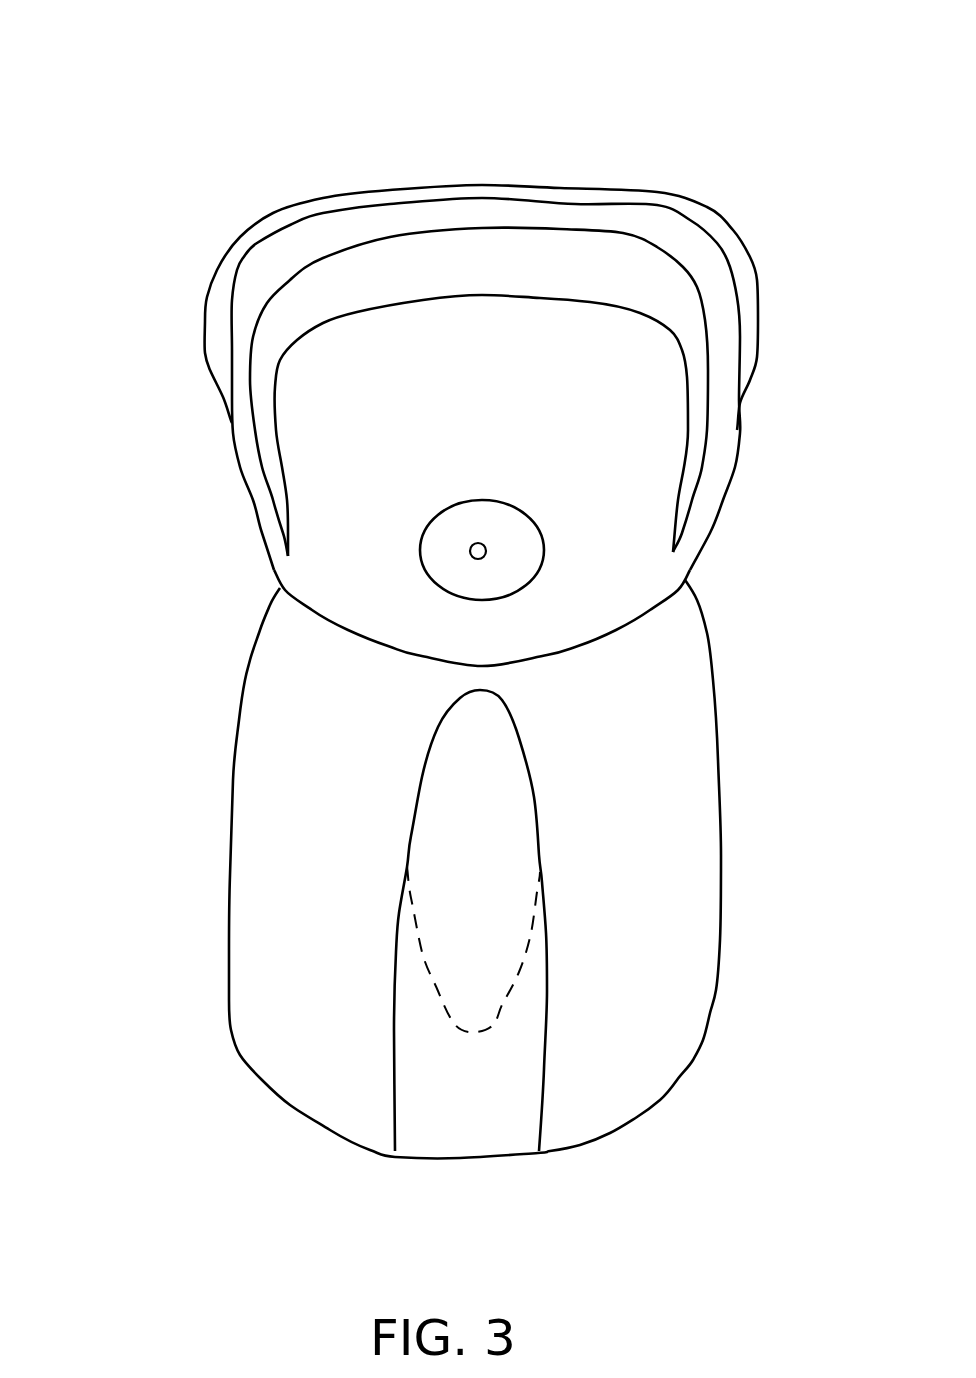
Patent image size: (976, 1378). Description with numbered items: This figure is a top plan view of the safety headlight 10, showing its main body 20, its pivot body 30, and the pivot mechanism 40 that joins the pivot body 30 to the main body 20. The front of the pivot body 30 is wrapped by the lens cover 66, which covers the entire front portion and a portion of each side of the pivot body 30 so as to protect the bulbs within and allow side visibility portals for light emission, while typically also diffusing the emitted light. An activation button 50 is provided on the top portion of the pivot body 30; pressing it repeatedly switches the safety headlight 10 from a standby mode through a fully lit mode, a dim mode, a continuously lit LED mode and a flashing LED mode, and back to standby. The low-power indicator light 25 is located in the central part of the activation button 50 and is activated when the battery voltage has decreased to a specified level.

The safety headlight 10 is at (243, 120).
The main body 20 is at (288, 990).
The low-power indicator light 25 is at (486, 556).
The pivot body 30 is at (332, 475).
The pivot mechanism 40 is at (335, 636).
The activation button 50 is at (532, 543).
The lens cover 66 is at (205, 305).